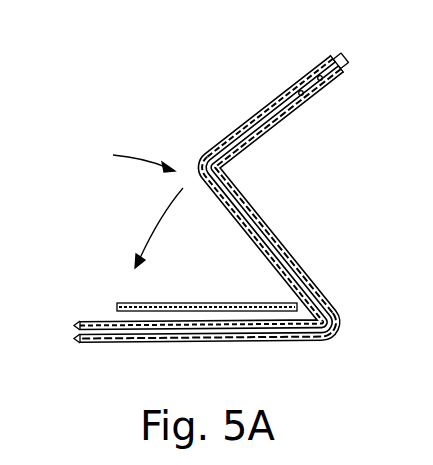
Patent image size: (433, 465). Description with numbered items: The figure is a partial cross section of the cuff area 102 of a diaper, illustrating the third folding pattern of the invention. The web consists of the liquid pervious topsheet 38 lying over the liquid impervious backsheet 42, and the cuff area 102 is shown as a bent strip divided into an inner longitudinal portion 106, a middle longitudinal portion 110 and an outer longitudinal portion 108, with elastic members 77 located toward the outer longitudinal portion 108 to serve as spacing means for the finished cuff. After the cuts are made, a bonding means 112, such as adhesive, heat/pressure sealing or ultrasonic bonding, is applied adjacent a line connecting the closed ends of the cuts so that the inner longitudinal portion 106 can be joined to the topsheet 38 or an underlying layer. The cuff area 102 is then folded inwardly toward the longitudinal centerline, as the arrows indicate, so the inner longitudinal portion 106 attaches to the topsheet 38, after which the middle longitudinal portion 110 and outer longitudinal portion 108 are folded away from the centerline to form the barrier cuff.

The topsheet 38 is at (96, 322).
The backsheet 42 is at (270, 231).
The elastic members 77 is at (303, 66).
The cuff area 102 is at (126, 202).
The inner longitudinal portion 106 is at (268, 262).
The outer longitudinal portion 108 is at (342, 76).
The middle longitudinal portion 110 is at (241, 124).
The bonding means 112 is at (140, 305).